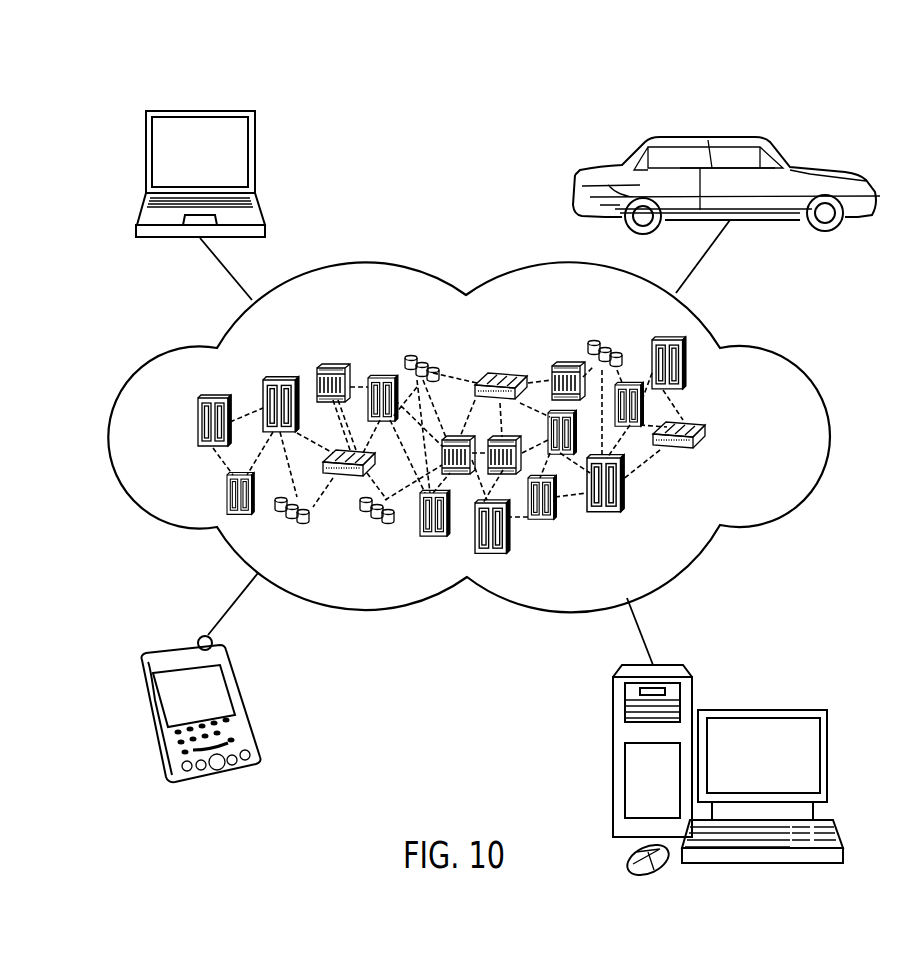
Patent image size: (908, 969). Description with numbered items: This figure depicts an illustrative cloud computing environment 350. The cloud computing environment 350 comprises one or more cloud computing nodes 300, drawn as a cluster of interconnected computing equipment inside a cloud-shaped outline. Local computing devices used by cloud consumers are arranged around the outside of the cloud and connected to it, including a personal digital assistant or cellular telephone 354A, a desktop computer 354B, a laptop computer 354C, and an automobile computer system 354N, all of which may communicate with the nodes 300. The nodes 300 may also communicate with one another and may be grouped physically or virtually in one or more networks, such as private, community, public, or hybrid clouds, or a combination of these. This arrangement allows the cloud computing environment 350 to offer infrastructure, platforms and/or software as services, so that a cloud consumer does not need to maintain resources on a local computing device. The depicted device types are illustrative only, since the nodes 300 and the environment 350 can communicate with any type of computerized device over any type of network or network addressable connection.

The cloud computing nodes 300 is at (716, 436).
The cloud computing environment 350 is at (777, 350).
The personal digital assistant (PDA) or cellular telephone 354A is at (182, 650).
The desktop computer 354B is at (762, 708).
The laptop computer 354C is at (199, 110).
The automobile computer system 354N is at (703, 137).